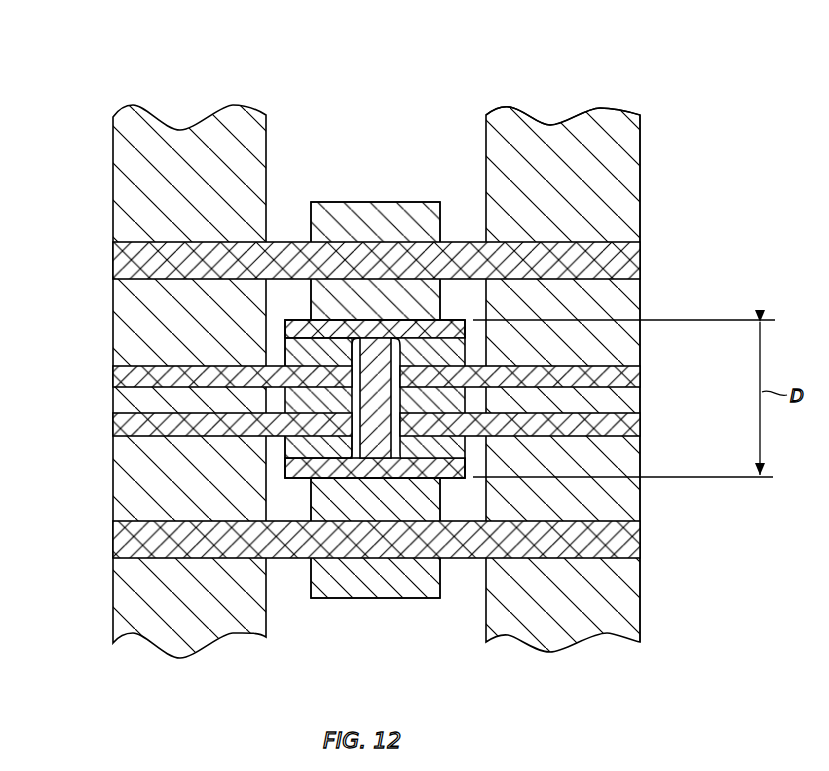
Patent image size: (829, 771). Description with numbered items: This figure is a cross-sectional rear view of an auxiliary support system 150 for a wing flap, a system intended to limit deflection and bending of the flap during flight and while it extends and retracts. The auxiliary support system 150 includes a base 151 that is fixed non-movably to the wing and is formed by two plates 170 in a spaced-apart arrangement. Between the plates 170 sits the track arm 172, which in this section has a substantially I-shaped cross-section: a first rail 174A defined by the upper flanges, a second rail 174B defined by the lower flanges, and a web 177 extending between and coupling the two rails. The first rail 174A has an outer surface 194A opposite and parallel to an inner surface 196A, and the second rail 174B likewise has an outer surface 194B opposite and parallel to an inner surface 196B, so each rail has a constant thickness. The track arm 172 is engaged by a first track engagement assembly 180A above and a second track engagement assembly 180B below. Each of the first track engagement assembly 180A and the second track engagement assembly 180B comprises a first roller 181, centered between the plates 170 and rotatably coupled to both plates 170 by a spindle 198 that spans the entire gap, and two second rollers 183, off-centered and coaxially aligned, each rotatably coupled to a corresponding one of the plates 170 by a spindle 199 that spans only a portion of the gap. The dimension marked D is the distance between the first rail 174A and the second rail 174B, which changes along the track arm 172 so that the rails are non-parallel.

The auxiliary support system 150 is at (377, 356).
The base 151 is at (642, 128).
The plates 170 is at (142, 203).
The track arm 172 is at (284, 330).
The first rail 174A is at (447, 332).
The second rail 174B is at (452, 473).
The web 177 is at (377, 430).
The first track engagement assembly 180A is at (249, 175).
The second track engagement assembly 180B is at (367, 615).
The first roller 181 is at (337, 212).
The second rollers 183 is at (333, 353).
The outer surface 194A is at (300, 318).
The outer surface 194B is at (297, 478).
The inner surface 196A is at (295, 347).
The inner surface 196B is at (295, 447).
The spindle 198 is at (575, 262).
The spindle 199 is at (123, 377).